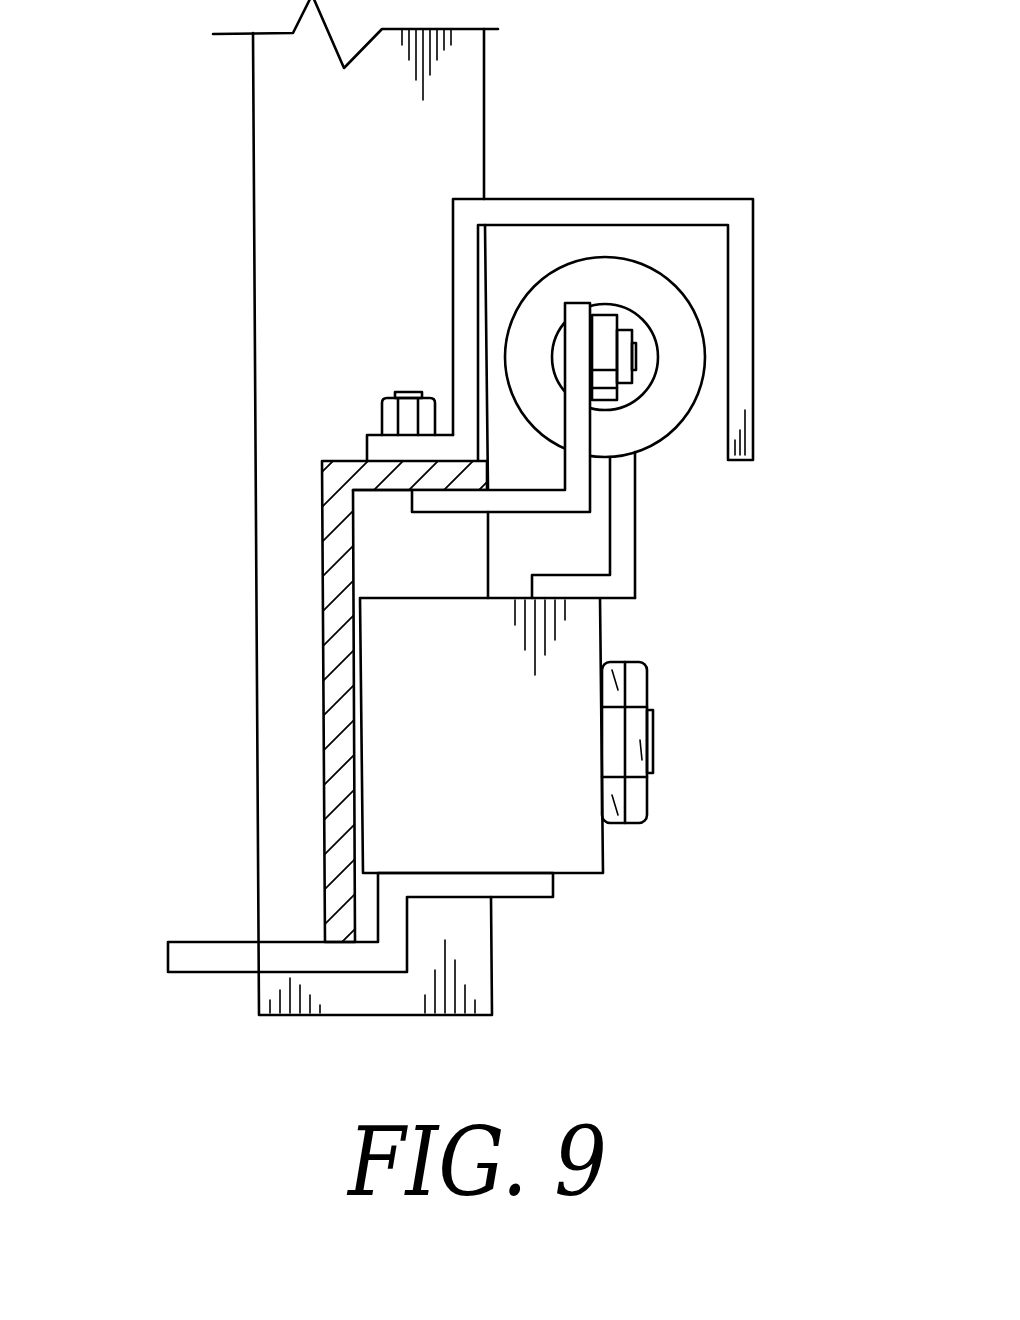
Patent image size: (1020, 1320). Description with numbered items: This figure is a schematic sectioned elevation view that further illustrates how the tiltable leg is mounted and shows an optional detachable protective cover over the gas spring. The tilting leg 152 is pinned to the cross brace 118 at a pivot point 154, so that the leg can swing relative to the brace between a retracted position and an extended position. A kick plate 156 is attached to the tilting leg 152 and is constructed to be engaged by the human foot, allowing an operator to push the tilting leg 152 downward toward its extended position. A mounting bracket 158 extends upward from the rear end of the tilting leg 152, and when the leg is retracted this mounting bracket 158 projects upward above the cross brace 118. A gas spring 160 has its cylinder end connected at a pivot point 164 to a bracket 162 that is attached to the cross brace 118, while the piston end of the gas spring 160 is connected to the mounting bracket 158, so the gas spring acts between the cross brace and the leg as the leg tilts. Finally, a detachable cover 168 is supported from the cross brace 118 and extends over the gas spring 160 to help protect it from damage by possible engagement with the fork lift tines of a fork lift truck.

The cross brace 118 is at (330, 670).
The tilting leg 152 is at (582, 623).
The pivot point 154 is at (655, 743).
The kick plate 156 is at (193, 942).
The mounting bracket 158 is at (622, 547).
The gas spring 160 is at (677, 307).
The bracket 162 is at (590, 440).
The pivot point 164 is at (653, 357).
The detachable cover 168 is at (585, 208).